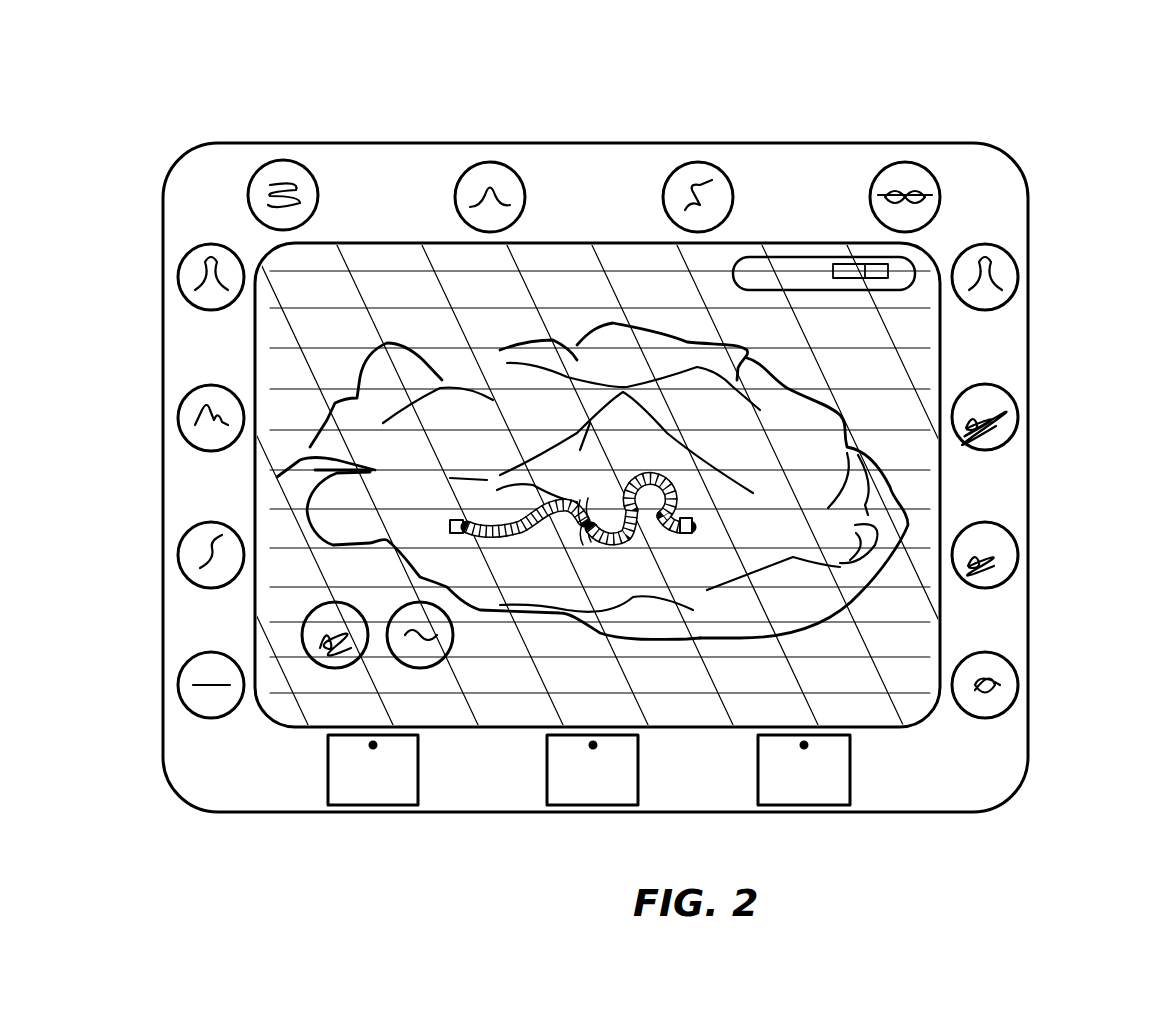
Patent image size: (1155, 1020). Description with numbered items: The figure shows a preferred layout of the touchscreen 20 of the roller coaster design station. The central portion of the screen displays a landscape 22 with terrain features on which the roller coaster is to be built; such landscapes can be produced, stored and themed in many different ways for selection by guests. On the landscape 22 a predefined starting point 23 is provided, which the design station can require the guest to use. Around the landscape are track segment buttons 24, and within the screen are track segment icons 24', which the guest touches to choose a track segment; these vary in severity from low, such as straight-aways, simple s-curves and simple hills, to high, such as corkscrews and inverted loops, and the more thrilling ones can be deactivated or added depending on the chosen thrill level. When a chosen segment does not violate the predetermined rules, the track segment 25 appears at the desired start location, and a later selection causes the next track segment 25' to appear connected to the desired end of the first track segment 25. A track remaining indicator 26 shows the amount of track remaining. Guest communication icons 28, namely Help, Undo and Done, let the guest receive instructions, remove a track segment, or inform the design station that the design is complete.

The touchscreen 20 is at (1037, 130).
The landscape 22 is at (868, 333).
The predefined starting point 23 is at (448, 522).
The track segment buttons 24 is at (610, 402).
The track segment icons 24' is at (372, 729).
The track segment 25 is at (529, 542).
The next track segment 25' is at (639, 532).
The track remaining indicator 26 is at (786, 257).
The guest communication icons 28 is at (365, 806).